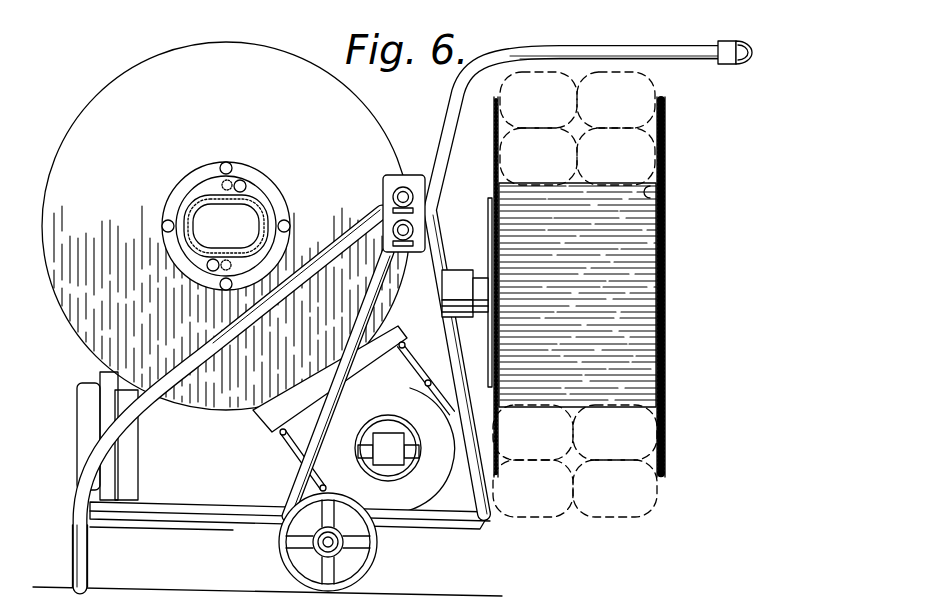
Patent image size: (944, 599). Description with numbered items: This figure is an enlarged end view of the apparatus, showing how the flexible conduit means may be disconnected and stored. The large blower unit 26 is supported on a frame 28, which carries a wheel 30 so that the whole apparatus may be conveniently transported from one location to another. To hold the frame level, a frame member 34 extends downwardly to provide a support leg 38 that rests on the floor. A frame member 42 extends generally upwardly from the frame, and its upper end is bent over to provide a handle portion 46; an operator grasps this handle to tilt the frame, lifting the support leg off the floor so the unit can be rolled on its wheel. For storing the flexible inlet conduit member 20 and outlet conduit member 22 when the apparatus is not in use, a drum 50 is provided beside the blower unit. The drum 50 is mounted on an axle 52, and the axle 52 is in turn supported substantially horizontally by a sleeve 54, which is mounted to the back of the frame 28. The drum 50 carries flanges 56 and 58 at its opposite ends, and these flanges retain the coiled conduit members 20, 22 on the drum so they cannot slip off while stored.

The inlet conduit member 20 is at (537, 518).
The outlet conduit member 22 is at (636, 518).
The blower unit 26 is at (103, 86).
The frame 28 is at (200, 524).
The wheel 30 is at (363, 581).
The frame member 34 is at (185, 355).
The support leg 38 is at (73, 551).
The frame member 42 is at (300, 484).
The handle portion 46 is at (672, 43).
The drum 50 is at (658, 200).
The axle 52 is at (480, 274).
The sleeve 54 is at (455, 268).
The flange 56 is at (666, 128).
The flange 58 is at (494, 123).